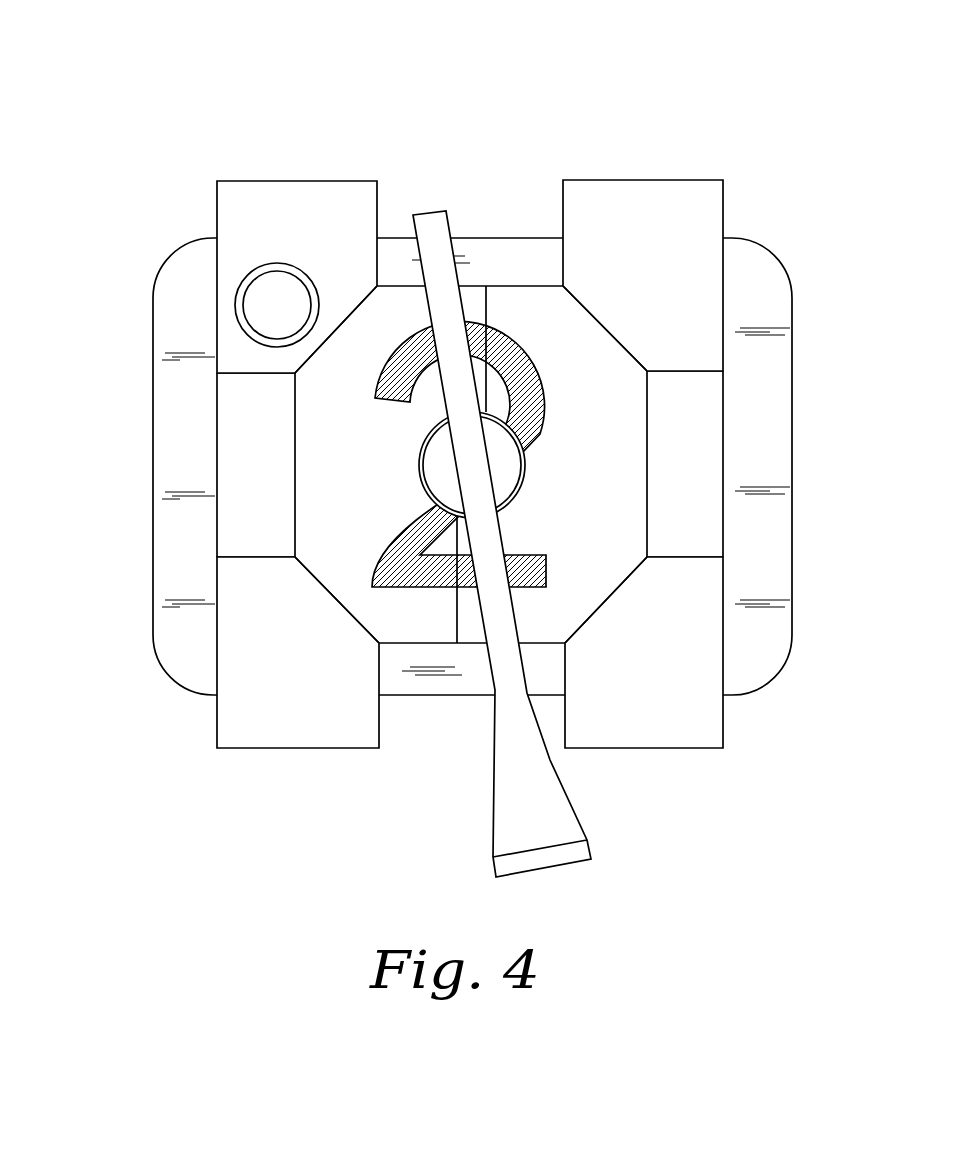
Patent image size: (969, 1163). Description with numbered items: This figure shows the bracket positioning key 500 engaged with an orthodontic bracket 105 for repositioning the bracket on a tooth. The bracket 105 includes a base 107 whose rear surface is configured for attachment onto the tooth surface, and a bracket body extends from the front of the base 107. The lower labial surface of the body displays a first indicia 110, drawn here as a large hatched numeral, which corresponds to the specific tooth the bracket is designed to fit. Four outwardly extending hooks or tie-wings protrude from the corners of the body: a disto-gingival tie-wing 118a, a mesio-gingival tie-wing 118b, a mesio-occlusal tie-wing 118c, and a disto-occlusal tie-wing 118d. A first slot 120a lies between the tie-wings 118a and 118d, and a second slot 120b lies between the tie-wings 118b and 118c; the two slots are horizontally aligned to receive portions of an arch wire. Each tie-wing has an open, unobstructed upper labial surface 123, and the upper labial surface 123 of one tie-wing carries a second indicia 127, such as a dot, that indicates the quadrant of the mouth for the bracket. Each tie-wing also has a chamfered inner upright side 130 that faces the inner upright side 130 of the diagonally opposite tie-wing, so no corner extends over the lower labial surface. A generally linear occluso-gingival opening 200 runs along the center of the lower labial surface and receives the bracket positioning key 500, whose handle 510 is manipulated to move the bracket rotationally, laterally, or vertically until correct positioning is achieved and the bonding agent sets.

The orthodontic bracket 105 is at (459, 422).
The base 107 is at (173, 258).
The first indicia 110 is at (541, 433).
The disto-gingival tie-wing 118a is at (291, 178).
The mesio-gingival tie-wing 118b is at (646, 172).
The mesio-occlusal tie-wing 118c is at (634, 764).
The disto-occlusal tie-wing 118d is at (304, 763).
The first slot 120a is at (229, 475).
The second slot 120b is at (717, 443).
The upper labial surface 123 is at (316, 242).
The second indicia 127 is at (298, 318).
The inner upright side 130 is at (337, 336).
The occluso-gingival opening 200 is at (472, 636).
The bracket positioning key 500 is at (531, 563).
The handle 510 is at (495, 803).